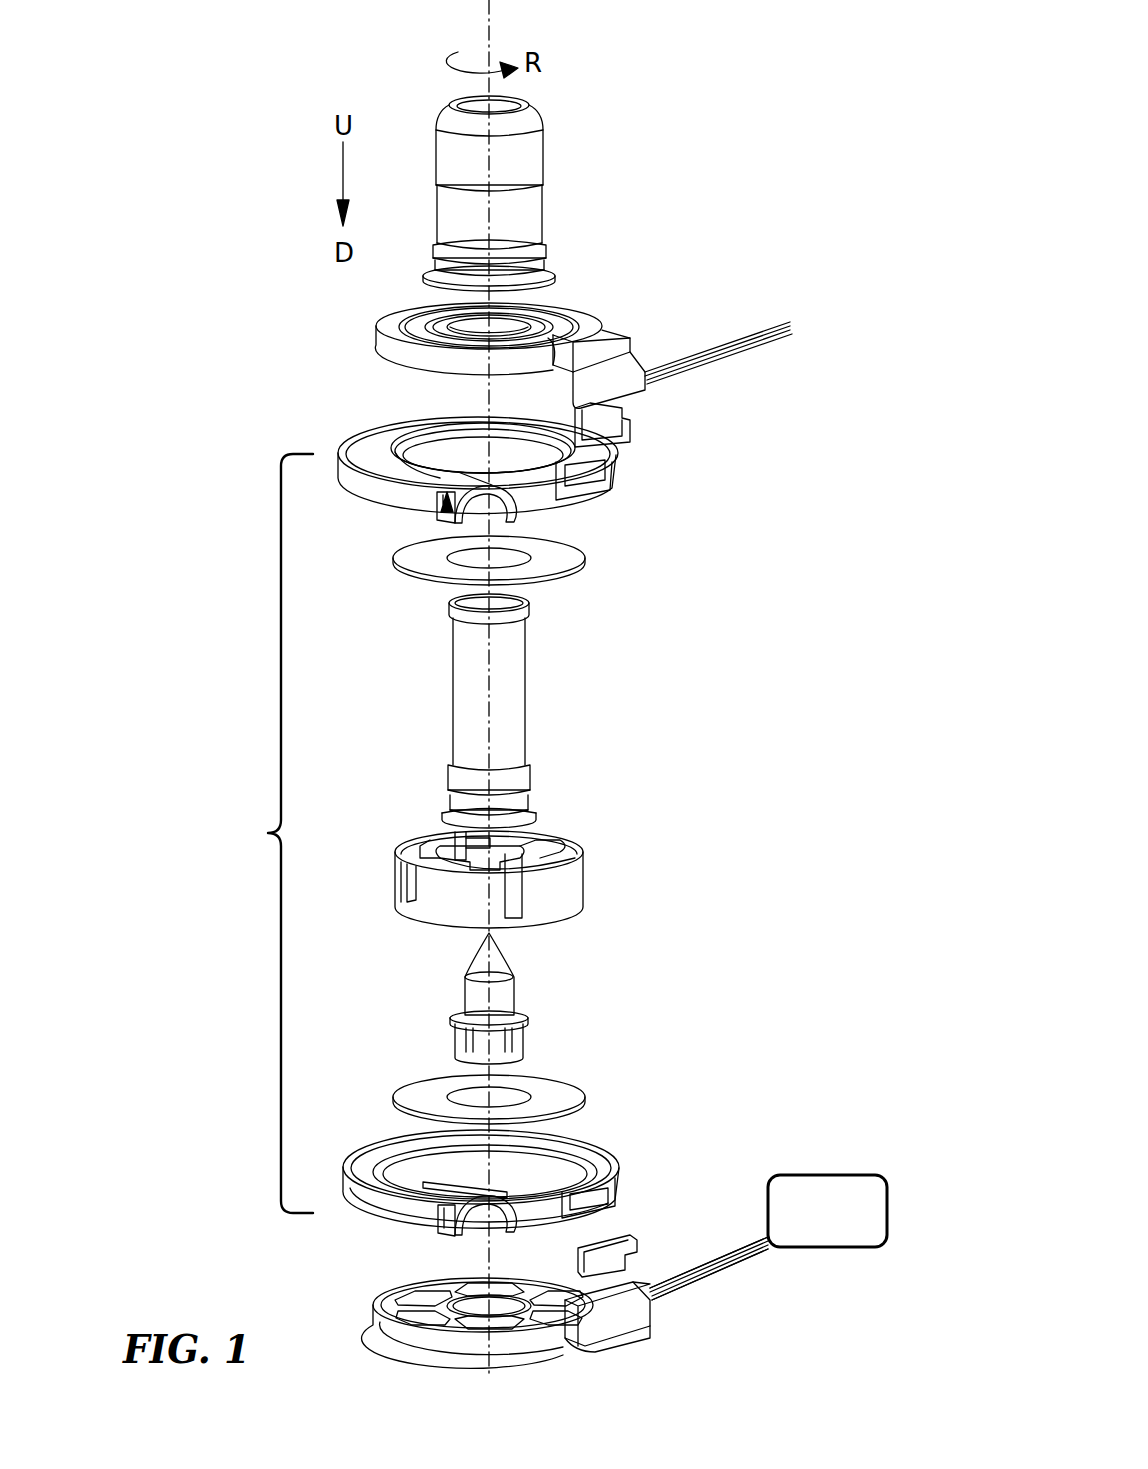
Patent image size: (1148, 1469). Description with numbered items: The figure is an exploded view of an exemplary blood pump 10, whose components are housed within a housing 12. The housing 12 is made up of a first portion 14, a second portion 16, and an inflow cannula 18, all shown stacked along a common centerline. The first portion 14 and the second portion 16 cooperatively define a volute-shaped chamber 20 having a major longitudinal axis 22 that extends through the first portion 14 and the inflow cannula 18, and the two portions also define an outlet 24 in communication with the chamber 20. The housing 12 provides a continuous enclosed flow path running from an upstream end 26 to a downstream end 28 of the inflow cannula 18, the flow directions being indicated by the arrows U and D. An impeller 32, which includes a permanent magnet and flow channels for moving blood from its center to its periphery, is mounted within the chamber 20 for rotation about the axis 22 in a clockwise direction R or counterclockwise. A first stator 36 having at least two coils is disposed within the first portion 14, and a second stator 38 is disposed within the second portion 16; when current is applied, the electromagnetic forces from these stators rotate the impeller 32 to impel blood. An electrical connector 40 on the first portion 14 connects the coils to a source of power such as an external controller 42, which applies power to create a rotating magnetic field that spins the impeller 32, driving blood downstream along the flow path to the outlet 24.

The blood pump 10 is at (730, 195).
The housing 12 is at (267, 833).
The first portion 14 is at (628, 1171).
The second portion 16 is at (615, 471).
The inflow cannula 18 is at (535, 168).
The volute-shaped chamber 20 is at (555, 1158).
The major longitudinal axis 22 is at (488, 28).
The outlet 24 is at (510, 1222).
The upstream end 26 is at (520, 106).
The downstream end 28 is at (556, 278).
The impeller 32 is at (584, 898).
The first stator 36 is at (640, 1342).
The second stator 38 is at (630, 338).
The electrical connector 40 is at (716, 1266).
The controller 42 is at (827, 1211).